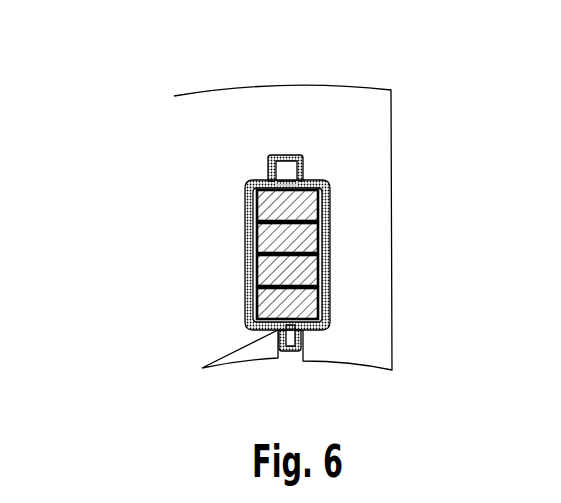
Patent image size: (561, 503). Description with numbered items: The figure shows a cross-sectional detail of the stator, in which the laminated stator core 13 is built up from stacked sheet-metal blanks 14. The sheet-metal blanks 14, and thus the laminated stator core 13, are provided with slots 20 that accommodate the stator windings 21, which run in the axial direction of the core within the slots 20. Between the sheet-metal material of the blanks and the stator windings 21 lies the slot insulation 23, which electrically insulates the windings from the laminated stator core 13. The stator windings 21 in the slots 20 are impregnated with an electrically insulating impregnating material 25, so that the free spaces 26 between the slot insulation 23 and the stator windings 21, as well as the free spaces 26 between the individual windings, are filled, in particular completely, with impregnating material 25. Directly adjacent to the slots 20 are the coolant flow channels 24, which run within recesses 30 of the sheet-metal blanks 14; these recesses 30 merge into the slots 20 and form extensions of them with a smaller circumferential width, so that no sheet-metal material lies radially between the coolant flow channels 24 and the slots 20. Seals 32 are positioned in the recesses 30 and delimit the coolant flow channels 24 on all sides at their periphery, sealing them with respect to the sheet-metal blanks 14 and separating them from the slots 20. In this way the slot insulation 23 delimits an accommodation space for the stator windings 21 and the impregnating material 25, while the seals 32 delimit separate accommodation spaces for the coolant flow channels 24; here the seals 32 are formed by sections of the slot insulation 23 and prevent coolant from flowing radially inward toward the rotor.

The laminated stator core 13 is at (262, 192).
The sheet-metal blanks 14 is at (223, 113).
The slots 20 is at (206, 264).
The stator windings 21 is at (332, 203).
The slot insulation 23 is at (206, 264).
The coolant flow channels 24 is at (281, 228).
The impregnating material 25 is at (206, 264).
The free spaces 26 is at (250, 290).
The recesses 30 is at (281, 226).
The seals 32 is at (268, 171).